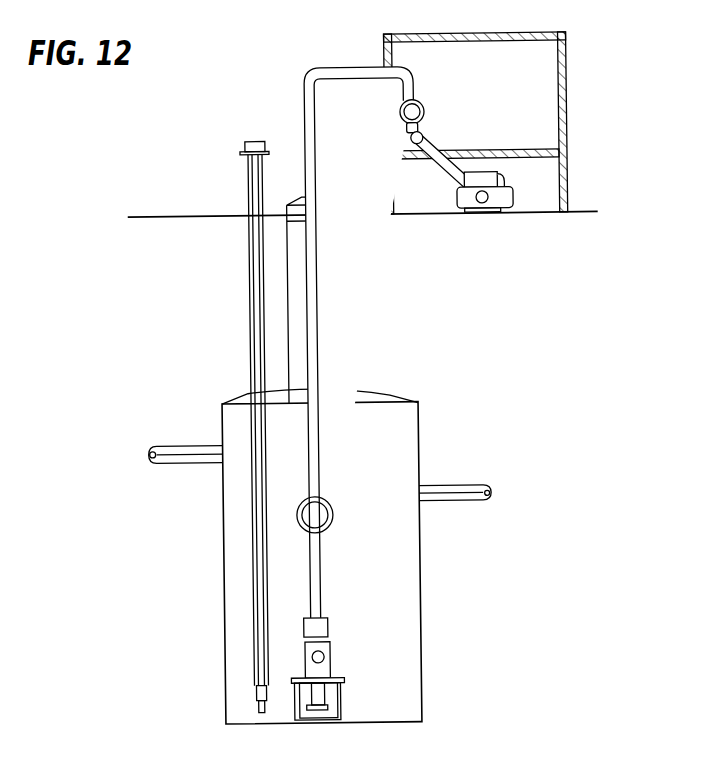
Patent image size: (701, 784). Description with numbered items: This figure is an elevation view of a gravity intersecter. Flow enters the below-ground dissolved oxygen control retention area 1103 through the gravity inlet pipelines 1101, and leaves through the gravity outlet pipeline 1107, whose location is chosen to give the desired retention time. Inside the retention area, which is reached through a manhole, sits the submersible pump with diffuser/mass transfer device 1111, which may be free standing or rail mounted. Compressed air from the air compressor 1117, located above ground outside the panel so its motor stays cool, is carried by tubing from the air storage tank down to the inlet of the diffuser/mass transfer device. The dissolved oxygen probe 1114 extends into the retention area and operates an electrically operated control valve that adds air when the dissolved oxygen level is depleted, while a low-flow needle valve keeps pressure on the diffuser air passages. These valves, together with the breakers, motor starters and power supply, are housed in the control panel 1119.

The gravity inlet pipelines 1101 is at (492, 442).
The dissolved oxygen control retention area 1103 is at (402, 442).
The gravity outlet pipeline 1107 is at (339, 514).
The submersible pump with diffuser/mass transfer device 1111 is at (332, 660).
The dissolved oxygen probe 1114 is at (246, 310).
The air compressor 1117 is at (533, 193).
The control panel 1119 is at (514, 90).